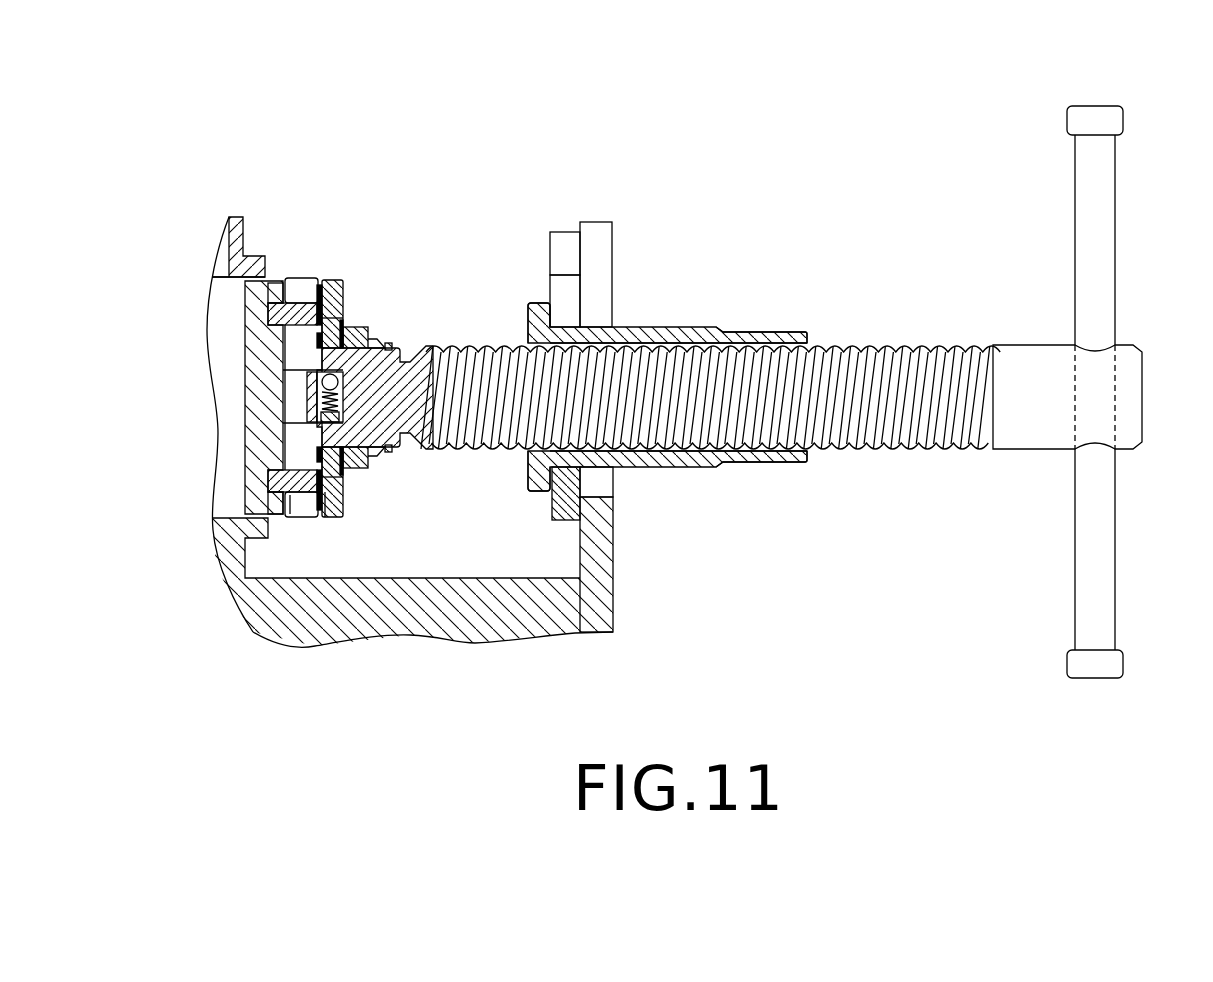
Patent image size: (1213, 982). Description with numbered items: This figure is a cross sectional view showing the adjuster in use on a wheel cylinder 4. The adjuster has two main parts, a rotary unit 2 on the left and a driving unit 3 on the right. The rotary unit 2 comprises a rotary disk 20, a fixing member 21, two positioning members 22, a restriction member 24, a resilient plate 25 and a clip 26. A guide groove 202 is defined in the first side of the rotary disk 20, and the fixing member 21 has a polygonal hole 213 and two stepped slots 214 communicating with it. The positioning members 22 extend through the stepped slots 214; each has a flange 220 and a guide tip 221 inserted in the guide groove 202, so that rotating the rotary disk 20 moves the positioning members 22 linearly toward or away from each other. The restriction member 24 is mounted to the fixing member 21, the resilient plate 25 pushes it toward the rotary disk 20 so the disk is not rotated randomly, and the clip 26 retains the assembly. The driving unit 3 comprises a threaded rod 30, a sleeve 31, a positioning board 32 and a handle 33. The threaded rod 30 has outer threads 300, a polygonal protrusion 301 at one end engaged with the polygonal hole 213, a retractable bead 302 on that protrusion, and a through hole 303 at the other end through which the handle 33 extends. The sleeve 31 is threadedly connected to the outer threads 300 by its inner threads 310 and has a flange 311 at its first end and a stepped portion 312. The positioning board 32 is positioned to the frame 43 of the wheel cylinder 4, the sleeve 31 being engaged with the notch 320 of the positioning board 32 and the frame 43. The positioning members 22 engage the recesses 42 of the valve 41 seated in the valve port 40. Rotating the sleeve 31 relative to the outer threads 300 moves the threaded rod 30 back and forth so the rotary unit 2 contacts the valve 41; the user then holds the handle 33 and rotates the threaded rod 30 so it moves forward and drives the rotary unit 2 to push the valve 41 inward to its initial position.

The rotary unit 2 is at (295, 398).
The driving unit 3 is at (667, 415).
The wheel cylinder 4 is at (230, 215).
The rotary disk 20 is at (330, 282).
The fixing member 21 is at (303, 280).
The positioning members 22 is at (297, 302).
The restriction member 24 is at (357, 330).
The resilient plate 25 is at (380, 340).
The clip 26 is at (390, 346).
The threaded rod 30 is at (1032, 356).
The sleeve 31 is at (641, 325).
The positioning board 32 is at (564, 512).
The handle 33 is at (1107, 240).
The valve port 40 is at (257, 262).
The valve 41 is at (255, 430).
The recesses 42 is at (277, 282).
The frame 43 is at (614, 548).
The guide groove 202 is at (343, 483).
The polygonal hole 213 is at (295, 385).
The stepped slots 214 is at (297, 350).
The flange 220 is at (313, 497).
The guide tip 221 is at (327, 517).
The outer threads 300 is at (880, 345).
The polygonal protrusion 301 is at (320, 403).
The bead 302 is at (402, 443).
The through hole 303 is at (1075, 400).
The inner threads 310 is at (652, 333).
The flange 311 is at (538, 312).
The neck 312 is at (768, 330).
The notch 320 is at (566, 283).